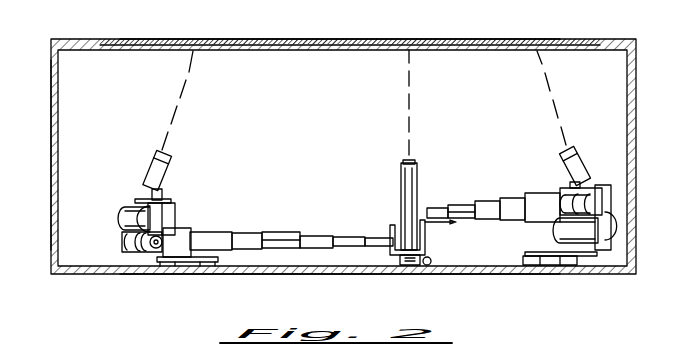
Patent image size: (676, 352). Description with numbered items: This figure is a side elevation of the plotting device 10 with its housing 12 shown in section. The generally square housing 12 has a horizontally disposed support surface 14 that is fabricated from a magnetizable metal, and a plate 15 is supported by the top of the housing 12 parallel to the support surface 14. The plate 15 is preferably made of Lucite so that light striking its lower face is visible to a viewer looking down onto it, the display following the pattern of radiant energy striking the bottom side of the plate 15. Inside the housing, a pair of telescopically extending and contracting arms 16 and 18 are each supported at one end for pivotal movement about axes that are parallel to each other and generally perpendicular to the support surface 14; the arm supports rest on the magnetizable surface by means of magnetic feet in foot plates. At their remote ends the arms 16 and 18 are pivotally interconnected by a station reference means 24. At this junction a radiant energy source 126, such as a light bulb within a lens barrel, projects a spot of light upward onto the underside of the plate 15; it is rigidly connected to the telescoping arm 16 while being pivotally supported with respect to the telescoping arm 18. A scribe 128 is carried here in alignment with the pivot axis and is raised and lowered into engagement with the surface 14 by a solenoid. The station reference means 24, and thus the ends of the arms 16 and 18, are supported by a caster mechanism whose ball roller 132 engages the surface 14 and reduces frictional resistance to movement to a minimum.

The plotting device 10 is at (69, 39).
The housing 12 is at (52, 146).
The support surface 14 is at (99, 267).
The plate 15 is at (525, 40).
The arm 16 is at (295, 226).
The arm 18 is at (497, 196).
The station reference means 24 is at (382, 250).
The radiant energy source 126 is at (400, 178).
The scribe 128 is at (406, 268).
The ball roller 132 is at (430, 261).